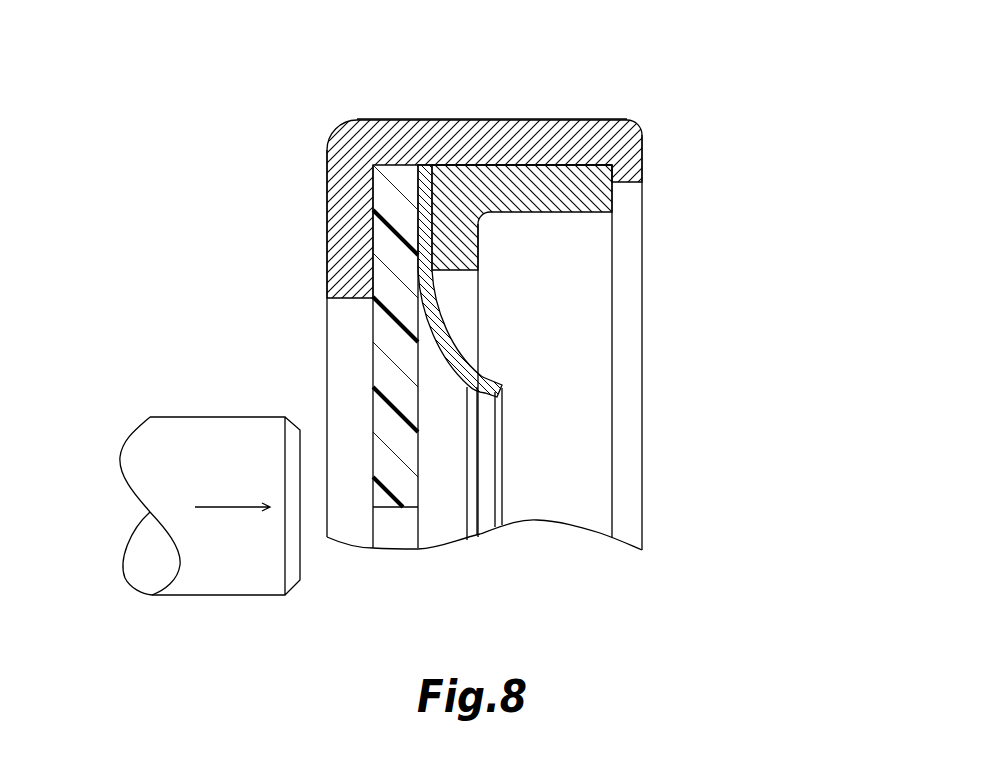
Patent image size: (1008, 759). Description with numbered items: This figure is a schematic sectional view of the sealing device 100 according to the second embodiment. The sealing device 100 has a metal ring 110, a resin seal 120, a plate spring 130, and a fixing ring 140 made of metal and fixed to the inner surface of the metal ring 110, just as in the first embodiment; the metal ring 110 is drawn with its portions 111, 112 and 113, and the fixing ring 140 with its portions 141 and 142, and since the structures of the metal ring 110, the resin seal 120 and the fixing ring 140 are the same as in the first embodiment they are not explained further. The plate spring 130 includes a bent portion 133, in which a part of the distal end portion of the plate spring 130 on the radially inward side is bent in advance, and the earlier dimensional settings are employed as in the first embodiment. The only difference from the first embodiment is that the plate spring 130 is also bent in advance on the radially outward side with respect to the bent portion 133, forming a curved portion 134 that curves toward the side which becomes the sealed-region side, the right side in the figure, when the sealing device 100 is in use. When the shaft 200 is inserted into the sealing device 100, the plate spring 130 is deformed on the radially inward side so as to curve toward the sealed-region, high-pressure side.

The sealing device 100 is at (464, 316).
The metal ring 110 is at (550, 281).
The top wall of housing 111 is at (503, 125).
The outer side wall of housing 112 is at (327, 182).
The inner side wall of housing 113 is at (640, 165).
The resin seal 120 is at (387, 320).
The plate spring 130 is at (623, 392).
The bent portion 133 is at (521, 499).
The curved portion 134 is at (440, 297).
The fixing ring 140 is at (641, 351).
The horizontal portion of support 141 is at (600, 185).
The vertical portion of support 142 is at (478, 250).
The shaft 200 is at (210, 506).